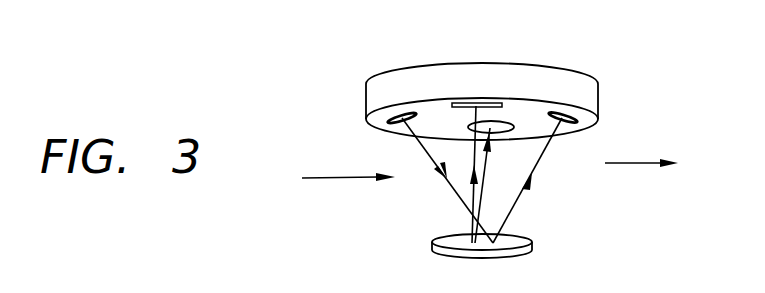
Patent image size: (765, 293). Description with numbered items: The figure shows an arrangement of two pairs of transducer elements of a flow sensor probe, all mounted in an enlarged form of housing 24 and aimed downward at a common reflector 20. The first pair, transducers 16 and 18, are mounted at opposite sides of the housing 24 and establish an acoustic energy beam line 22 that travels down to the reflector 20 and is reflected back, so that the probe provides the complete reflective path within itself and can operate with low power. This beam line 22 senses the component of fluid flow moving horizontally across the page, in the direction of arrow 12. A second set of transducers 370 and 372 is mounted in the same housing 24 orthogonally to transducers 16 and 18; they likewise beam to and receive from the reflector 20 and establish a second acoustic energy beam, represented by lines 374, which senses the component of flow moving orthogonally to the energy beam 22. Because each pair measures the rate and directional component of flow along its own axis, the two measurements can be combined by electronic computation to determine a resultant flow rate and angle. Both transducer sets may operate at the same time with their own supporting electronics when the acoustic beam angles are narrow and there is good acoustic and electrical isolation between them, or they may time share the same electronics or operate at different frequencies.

The arrow 12 is at (327, 180).
The transducer 16 is at (389, 121).
The transducer 18 is at (577, 119).
The reflector 20 is at (533, 242).
The acoustic energy beam line 22 is at (462, 197).
The housing 24 is at (600, 88).
The transducer 370 is at (453, 103).
The transducer 372 is at (513, 128).
The acoustic energy beam lines 374 is at (478, 190).